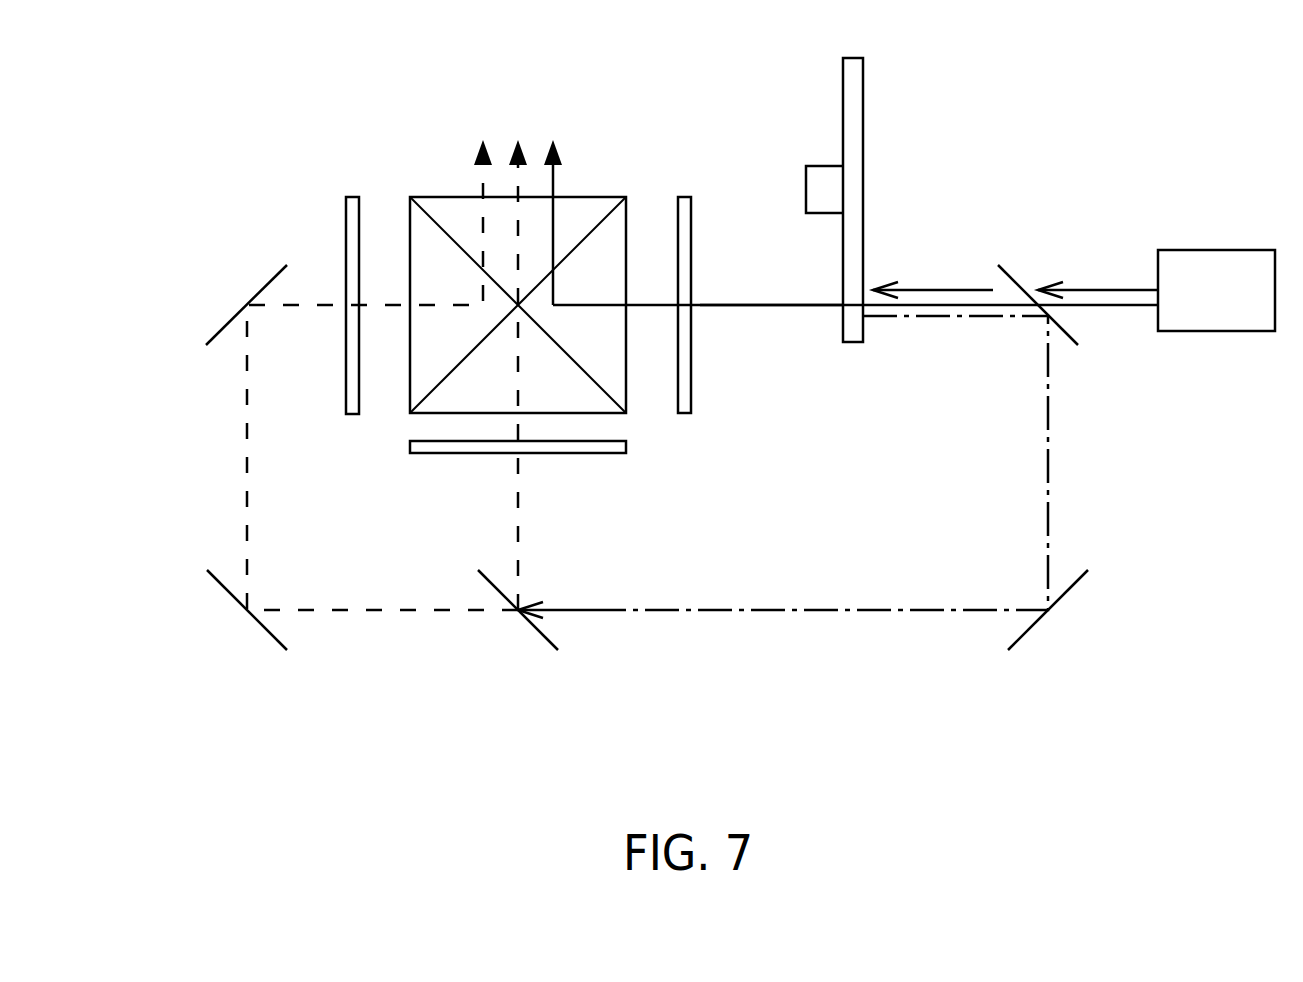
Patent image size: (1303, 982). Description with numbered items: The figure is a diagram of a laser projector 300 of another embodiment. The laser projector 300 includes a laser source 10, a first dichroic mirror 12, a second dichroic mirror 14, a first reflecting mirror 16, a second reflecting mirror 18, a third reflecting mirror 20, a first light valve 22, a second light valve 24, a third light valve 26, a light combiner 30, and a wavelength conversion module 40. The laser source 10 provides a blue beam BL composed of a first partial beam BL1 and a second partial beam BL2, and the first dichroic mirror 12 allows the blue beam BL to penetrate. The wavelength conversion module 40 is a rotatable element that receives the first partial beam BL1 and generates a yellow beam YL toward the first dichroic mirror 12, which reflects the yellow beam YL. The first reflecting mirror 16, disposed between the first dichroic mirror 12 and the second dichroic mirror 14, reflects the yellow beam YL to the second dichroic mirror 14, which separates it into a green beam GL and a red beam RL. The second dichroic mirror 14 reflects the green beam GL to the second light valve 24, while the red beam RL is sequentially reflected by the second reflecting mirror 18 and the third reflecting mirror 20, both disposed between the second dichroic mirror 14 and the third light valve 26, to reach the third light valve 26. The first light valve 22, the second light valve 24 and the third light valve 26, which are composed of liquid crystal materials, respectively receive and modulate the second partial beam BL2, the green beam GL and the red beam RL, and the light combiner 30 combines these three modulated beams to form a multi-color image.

The laser projector 300 is at (1153, 112).
The laser source 10 is at (1198, 250).
The first dichroic mirror 12 is at (1020, 287).
The second dichroic mirror 14 is at (545, 638).
The first reflecting mirror 16 is at (1075, 583).
The second reflecting mirror 18 is at (226, 592).
The third reflecting mirror 20 is at (265, 285).
The first light valve 22 is at (687, 197).
The second light valve 24 is at (607, 455).
The third light valve 26 is at (345, 212).
The light combiner 30 is at (583, 197).
The wavelength conversion module 40 is at (843, 108).
The blue beam BL is at (1100, 290).
The first partial beam BL1 is at (932, 288).
The second partial beam BL2 is at (783, 303).
The green beam GL is at (520, 525).
The red beam RL is at (397, 612).
The yellow beam YL is at (713, 612).